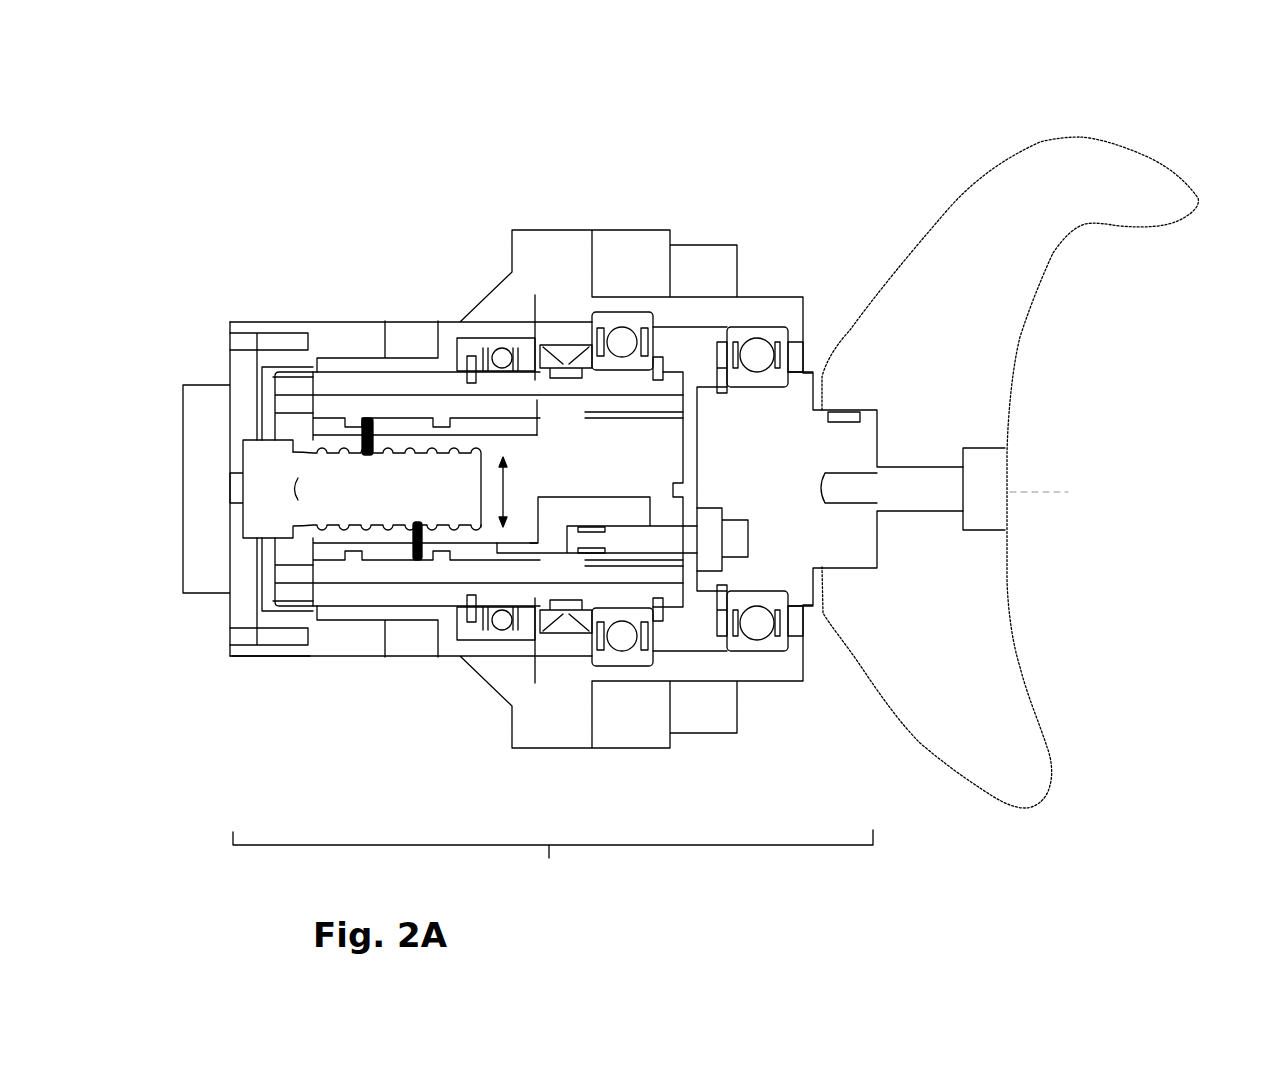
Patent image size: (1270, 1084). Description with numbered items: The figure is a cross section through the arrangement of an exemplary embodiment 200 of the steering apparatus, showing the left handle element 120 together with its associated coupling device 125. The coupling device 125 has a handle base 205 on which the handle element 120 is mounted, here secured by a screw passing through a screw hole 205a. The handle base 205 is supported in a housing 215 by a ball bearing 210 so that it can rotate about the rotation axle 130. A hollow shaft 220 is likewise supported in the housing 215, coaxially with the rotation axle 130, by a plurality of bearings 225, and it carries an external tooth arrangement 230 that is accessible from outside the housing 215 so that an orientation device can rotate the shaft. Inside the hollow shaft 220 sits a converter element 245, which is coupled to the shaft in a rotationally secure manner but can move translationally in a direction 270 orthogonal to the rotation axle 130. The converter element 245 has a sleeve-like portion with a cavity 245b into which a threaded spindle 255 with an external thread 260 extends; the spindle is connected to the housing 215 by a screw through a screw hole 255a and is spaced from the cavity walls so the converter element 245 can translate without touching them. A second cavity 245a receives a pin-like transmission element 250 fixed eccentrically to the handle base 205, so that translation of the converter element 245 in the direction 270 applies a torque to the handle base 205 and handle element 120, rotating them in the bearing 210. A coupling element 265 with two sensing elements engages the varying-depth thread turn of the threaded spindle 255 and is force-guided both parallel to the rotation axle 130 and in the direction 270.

The exemplary embodiment 200 is at (1063, 99).
The handle element 120 is at (978, 347).
The coupling device 125 is at (553, 874).
The rotation axle 130 is at (1063, 494).
The handle base 205 is at (304, 322).
The screw hole 205a is at (947, 507).
The bearing 210 is at (757, 355).
The housing 215 is at (310, 657).
The hollow shaft 220 is at (397, 380).
The bearings 225 is at (619, 340).
The external tooth arrangement 230 is at (557, 380).
The converter element 245 is at (398, 557).
The second cavity 245a is at (612, 522).
The cavity 245b is at (518, 458).
The transmission element 250 is at (732, 552).
The threaded spindle 255 is at (411, 502).
The screw hole 255a is at (260, 490).
The thread 260 is at (357, 535).
The coupling element 265 is at (368, 418).
The direction 270 is at (507, 493).